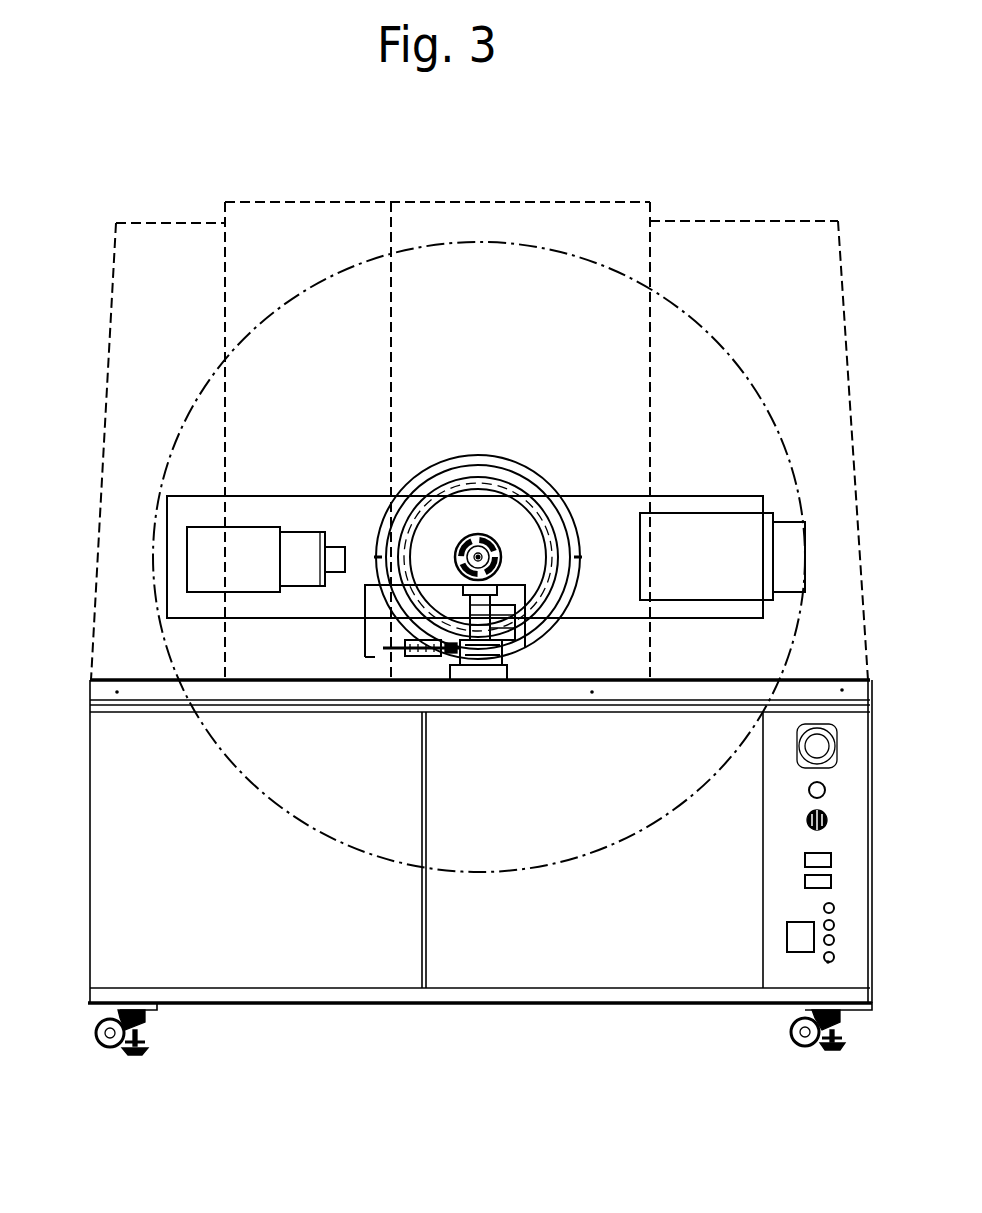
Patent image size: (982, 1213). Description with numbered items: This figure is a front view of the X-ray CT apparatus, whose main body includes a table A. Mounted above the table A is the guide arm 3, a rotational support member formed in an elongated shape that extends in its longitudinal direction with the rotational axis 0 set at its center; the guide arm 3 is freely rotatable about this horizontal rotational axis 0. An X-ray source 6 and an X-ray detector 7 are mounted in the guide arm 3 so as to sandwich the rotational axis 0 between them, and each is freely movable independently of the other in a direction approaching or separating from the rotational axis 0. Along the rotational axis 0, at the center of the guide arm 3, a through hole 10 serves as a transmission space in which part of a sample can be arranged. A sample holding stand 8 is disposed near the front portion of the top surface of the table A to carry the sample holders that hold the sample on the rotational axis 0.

The table A is at (125, 682).
The guide arm 3 is at (607, 496).
The X-ray source 6 is at (262, 527).
The X-ray detector 7 is at (678, 528).
The through hole 10 is at (465, 545).
The rotational axis 0 is at (480, 553).
The sample holding stand 8 is at (505, 662).